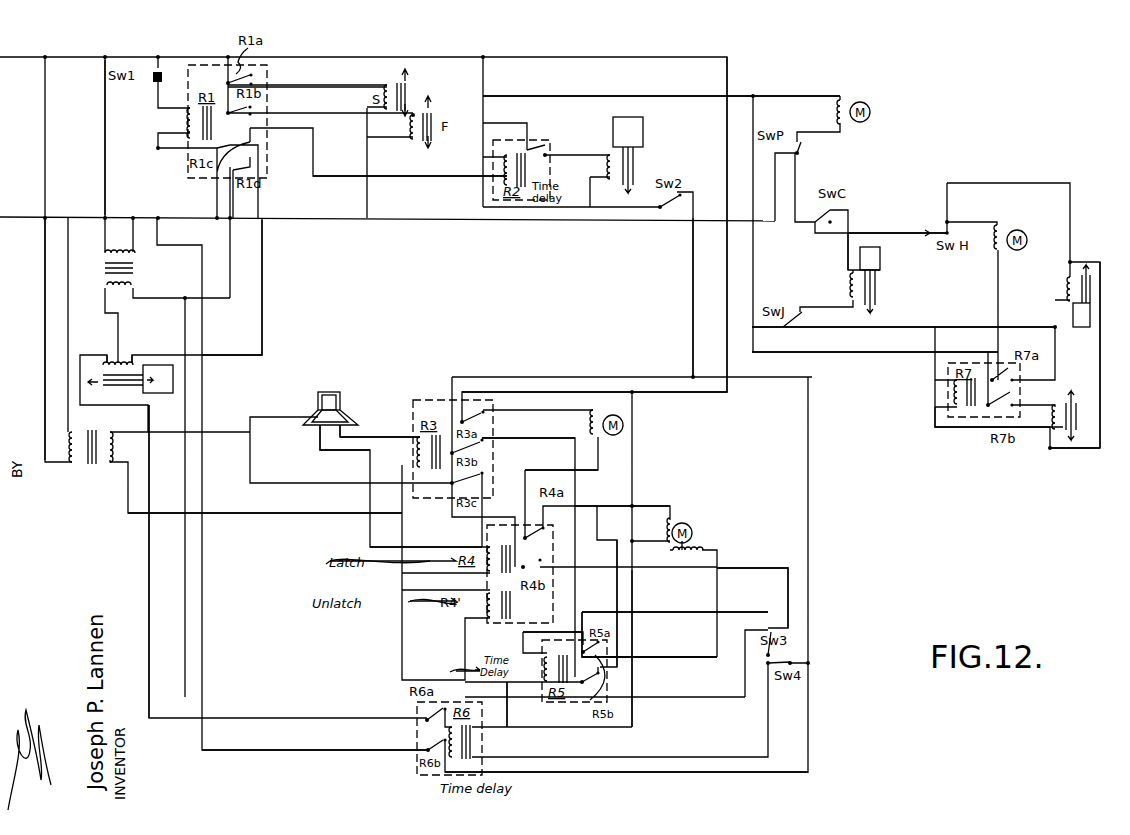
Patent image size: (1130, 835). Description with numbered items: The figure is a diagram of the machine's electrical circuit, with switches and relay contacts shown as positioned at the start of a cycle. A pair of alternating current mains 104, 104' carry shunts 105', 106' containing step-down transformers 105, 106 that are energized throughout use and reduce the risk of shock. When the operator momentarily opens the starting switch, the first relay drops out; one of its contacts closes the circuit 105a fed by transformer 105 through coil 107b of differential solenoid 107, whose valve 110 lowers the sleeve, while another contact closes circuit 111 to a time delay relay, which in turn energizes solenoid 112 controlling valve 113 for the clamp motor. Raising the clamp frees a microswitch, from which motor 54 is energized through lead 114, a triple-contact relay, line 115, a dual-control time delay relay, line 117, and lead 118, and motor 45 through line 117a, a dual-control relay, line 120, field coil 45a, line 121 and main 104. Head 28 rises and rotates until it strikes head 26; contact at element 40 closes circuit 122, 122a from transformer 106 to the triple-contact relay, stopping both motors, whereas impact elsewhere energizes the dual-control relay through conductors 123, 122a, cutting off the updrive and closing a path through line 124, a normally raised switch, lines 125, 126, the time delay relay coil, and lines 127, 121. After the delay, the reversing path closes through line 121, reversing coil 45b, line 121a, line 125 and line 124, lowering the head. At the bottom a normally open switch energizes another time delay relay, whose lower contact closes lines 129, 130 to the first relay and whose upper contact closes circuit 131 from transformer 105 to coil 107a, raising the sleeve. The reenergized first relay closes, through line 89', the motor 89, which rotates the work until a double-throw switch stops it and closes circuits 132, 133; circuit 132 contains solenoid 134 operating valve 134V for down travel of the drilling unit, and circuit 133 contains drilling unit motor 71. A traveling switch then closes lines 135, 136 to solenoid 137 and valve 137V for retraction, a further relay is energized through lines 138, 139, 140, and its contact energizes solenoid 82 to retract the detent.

The alternating current main 104 is at (363, 236).
The alternating current main 104' is at (387, 206).
The shunt 105' is at (84, 137).
The shunt 106' is at (22, 340).
The transformer 105 is at (134, 267).
The circuit 105a is at (262, 304).
The transformer 106 is at (91, 439).
The differential solenoid 107 is at (115, 381).
The solenoid coil 107a is at (108, 362).
The solenoid coil 107b is at (130, 362).
The valve 110 is at (165, 397).
The circuit 111 is at (430, 178).
The solenoid 112 is at (610, 170).
The valve 113 is at (644, 128).
The lead 114 is at (691, 368).
The line 115 is at (541, 440).
The line 117 is at (617, 588).
The line 117a is at (547, 470).
The lead 118 is at (554, 377).
The line 120 is at (606, 505).
The line 121 is at (632, 713).
The line 121a is at (672, 660).
The circuit 122 is at (394, 430).
The circuit conductor 122a is at (293, 515).
The conductor 123 is at (418, 546).
The line 124 is at (685, 598).
The line 125 is at (649, 634).
The line 126 is at (523, 637).
The line 127 is at (509, 713).
The line 129 is at (542, 773).
The line 130 is at (290, 752).
The circuit 131 is at (186, 593).
The circuit 132 is at (848, 259).
The circuit 133 is at (882, 233).
The solenoid 134 is at (850, 291).
The valve 134V is at (881, 262).
The line 135 is at (890, 327).
The line 136 is at (1070, 231).
The solenoid 137 is at (1069, 285).
The valve 137V is at (1080, 328).
The line 138 is at (930, 344).
The line 139 is at (962, 428).
The line 140 is at (1072, 449).
The head 26 is at (342, 407).
The head 28 is at (320, 428).
The contact element 40 is at (350, 419).
The motor 45 is at (689, 525).
The motor field coil 45a is at (670, 528).
The reversing coil 45b is at (690, 553).
The motor 54 is at (606, 434).
The drilling unit motor 71 is at (1006, 227).
The solenoid 82 is at (1064, 413).
The motor 89 is at (856, 99).
The line 89' is at (661, 82).